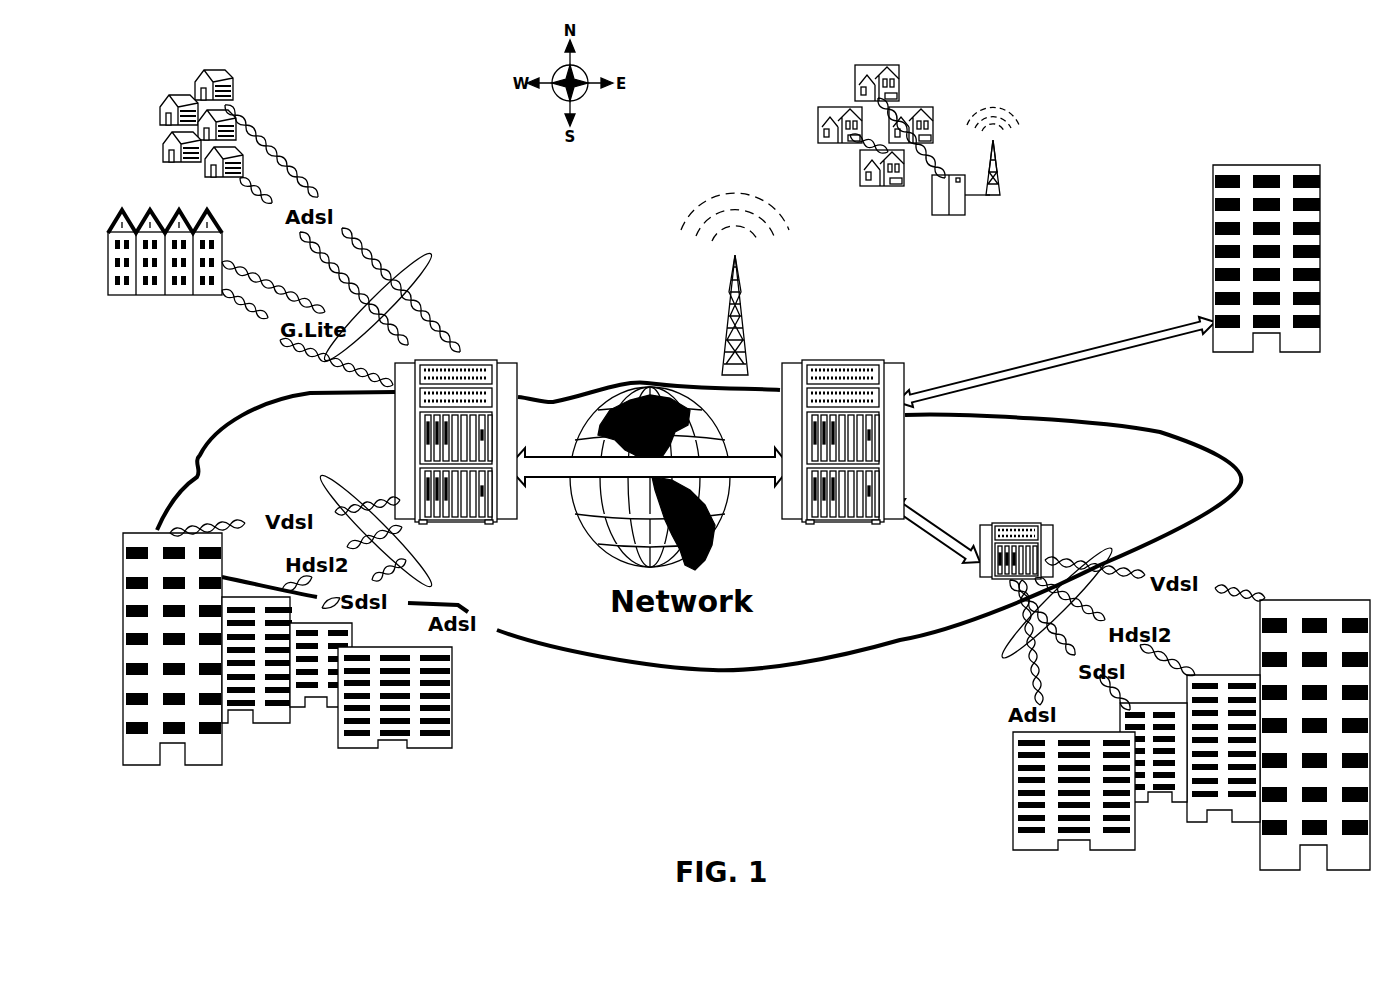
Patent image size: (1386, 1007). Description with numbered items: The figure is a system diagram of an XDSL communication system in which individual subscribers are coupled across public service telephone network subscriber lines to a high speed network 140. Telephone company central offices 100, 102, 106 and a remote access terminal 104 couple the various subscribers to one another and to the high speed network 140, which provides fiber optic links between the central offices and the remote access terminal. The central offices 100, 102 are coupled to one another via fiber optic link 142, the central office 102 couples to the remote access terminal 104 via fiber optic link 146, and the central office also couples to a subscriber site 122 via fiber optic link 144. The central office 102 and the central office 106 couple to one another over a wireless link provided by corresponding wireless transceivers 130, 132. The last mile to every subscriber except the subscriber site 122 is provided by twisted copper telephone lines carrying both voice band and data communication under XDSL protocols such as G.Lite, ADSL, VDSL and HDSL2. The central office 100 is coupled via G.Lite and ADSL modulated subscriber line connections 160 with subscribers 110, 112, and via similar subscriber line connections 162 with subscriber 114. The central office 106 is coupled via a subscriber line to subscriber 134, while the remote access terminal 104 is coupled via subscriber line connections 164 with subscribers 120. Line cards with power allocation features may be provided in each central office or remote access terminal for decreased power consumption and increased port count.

The central office 100 is at (480, 368).
The central office 102 is at (855, 368).
The remote access terminal 104 is at (1025, 540).
The central office 106 is at (965, 210).
The subscribers 110 is at (232, 92).
The subscribers 112 is at (140, 215).
The subscriber 114 is at (363, 738).
The subscribers 120 is at (1020, 805).
The subscriber site 122 is at (1230, 245).
The wireless transceiver 130 is at (740, 285).
The wireless transceiver 132 is at (997, 158).
The subscriber 134 is at (858, 170).
The high speed network 140 is at (620, 672).
The fiber optic link 142 is at (545, 475).
The fiber optic link 144 is at (1100, 345).
The fiber optic link 146 is at (935, 533).
The subscriber line connections 160 is at (425, 268).
The subscriber line connections 162 is at (323, 475).
The subscriber line connections 164 is at (1003, 657).